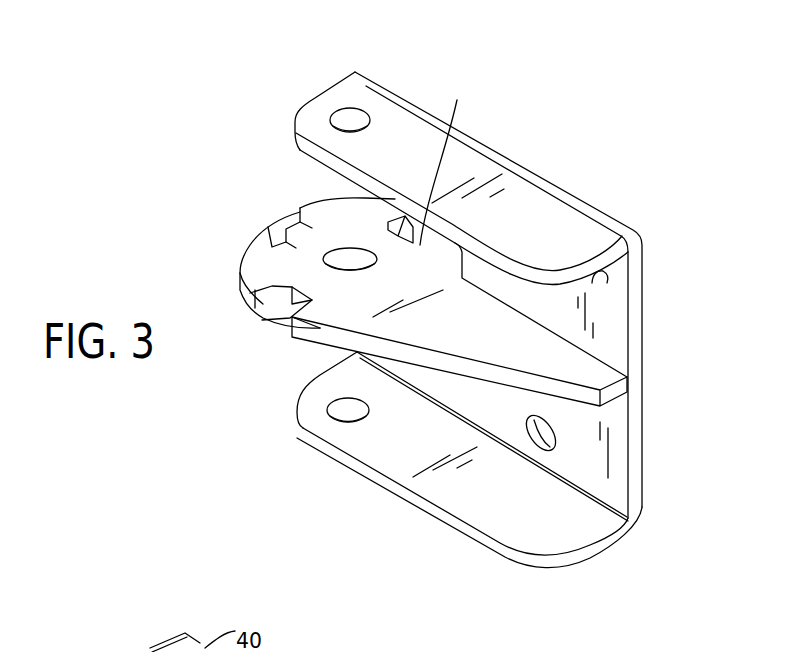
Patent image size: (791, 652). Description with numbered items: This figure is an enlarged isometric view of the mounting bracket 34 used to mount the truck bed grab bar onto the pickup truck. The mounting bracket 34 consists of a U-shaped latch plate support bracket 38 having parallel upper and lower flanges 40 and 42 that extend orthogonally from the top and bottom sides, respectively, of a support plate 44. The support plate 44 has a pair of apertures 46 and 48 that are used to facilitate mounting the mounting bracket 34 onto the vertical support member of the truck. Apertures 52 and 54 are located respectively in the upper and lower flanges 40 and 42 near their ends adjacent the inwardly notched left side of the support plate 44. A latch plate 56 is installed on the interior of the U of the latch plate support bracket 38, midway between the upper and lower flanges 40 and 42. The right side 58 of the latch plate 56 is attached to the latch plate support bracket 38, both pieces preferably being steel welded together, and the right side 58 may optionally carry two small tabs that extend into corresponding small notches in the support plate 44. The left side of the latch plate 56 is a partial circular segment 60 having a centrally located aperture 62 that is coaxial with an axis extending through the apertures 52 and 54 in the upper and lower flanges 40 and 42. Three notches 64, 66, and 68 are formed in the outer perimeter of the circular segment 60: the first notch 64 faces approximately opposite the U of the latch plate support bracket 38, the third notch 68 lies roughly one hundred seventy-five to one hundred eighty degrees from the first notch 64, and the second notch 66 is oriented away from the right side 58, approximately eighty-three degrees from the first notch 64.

The mounting bracket 34 is at (476, 328).
The latch plate support bracket 38 is at (465, 527).
The upper flange 40 is at (533, 203).
The lower flange 42 is at (565, 527).
The support plate 44 is at (613, 414).
The aperture 46 is at (598, 273).
The aperture 48 is at (542, 417).
The aperture 52 is at (352, 121).
The aperture 54 is at (349, 409).
The latch plate 56 is at (436, 295).
The right side of the latch plate 58 is at (573, 363).
The partial circular segment 60 is at (298, 271).
The aperture 62 is at (357, 270).
The first notch 64 is at (445, 161).
The second notch 66 is at (297, 218).
The third notch 68 is at (277, 303).